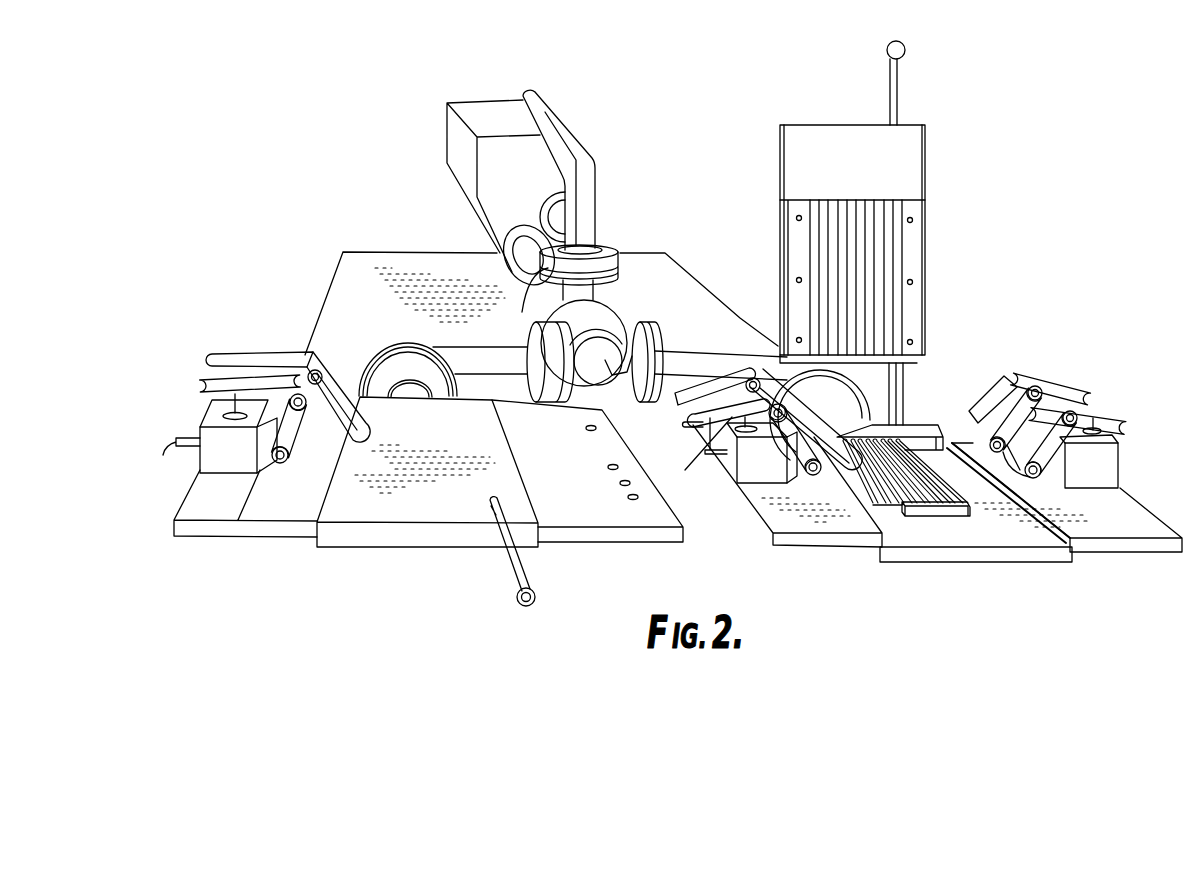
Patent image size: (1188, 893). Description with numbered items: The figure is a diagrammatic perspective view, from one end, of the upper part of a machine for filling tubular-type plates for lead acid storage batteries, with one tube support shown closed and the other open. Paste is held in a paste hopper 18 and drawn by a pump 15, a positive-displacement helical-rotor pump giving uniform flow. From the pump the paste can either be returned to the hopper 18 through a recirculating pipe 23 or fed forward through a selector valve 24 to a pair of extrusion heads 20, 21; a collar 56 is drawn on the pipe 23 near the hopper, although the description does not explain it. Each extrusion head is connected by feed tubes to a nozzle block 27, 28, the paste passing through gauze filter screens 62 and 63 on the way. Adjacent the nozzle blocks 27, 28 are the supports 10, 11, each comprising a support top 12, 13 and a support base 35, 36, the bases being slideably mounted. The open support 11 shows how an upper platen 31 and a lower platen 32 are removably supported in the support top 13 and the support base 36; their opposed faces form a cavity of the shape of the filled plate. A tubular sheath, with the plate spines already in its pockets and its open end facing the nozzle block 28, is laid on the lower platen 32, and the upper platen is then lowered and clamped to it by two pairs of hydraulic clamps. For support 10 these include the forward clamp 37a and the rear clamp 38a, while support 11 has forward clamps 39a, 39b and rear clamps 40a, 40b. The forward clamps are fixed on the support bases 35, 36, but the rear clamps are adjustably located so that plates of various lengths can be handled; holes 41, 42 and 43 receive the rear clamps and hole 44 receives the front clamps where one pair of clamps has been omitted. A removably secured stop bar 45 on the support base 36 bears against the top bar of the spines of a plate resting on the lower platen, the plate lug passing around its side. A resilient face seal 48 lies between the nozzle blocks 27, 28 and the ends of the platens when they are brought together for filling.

The support 10 is at (376, 549).
The support 11 is at (936, 561).
The support top 12 is at (352, 502).
The support top 13 is at (912, 174).
The pump 15 is at (506, 262).
The paste hopper 18 is at (453, 150).
The extrusion head 20 is at (395, 393).
The extrusion head 21 is at (862, 398).
The recirculating pipe 23 is at (560, 122).
The selector valve 24 is at (601, 336).
The nozzle block 27 is at (417, 400).
The nozzle block 28 is at (925, 425).
The upper platen 31 is at (937, 231).
The lower platen 32 is at (980, 507).
The support base 35 is at (333, 543).
The support base 36 is at (1028, 553).
The hydraulic clamp 37a is at (242, 354).
The hydraulic clamp 38a is at (200, 382).
The hydraulic clamp 39a is at (725, 386).
The hydraulic clamp 39b is at (1062, 372).
The hydraulic clamp 40a is at (700, 416).
The hydraulic clamp 40b is at (1101, 412).
The hole 41 is at (608, 467).
The hole 42 is at (620, 483).
The hole 43 is at (628, 497).
The hole 44 is at (585, 428).
The stop bar 45 is at (935, 512).
The face seal 48 is at (872, 436).
The collar 56 is at (552, 197).
The gauze filter screen 62 is at (530, 325).
The gauze filter screen 63 is at (648, 333).